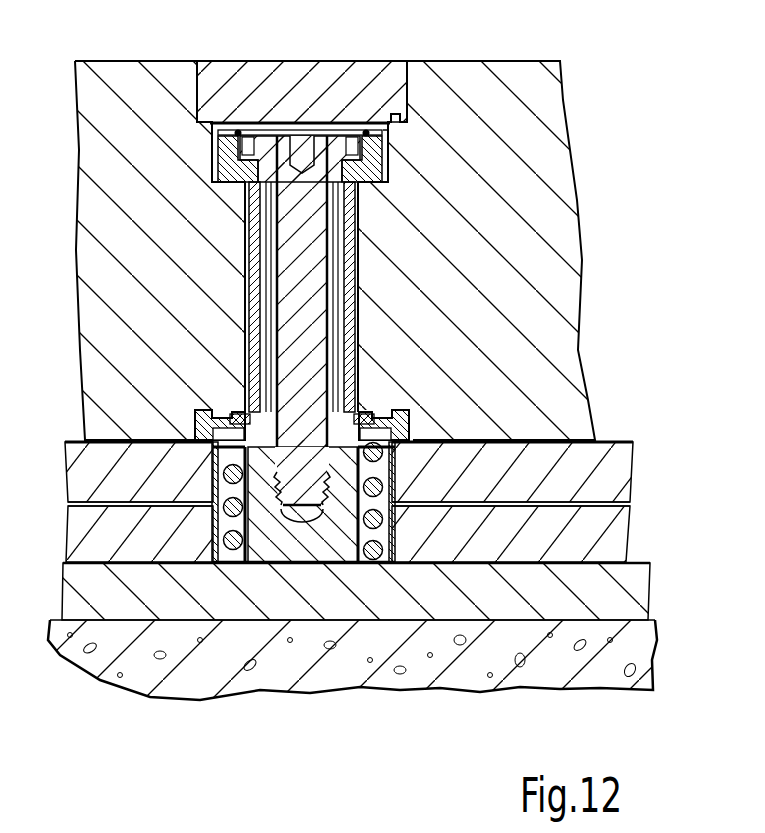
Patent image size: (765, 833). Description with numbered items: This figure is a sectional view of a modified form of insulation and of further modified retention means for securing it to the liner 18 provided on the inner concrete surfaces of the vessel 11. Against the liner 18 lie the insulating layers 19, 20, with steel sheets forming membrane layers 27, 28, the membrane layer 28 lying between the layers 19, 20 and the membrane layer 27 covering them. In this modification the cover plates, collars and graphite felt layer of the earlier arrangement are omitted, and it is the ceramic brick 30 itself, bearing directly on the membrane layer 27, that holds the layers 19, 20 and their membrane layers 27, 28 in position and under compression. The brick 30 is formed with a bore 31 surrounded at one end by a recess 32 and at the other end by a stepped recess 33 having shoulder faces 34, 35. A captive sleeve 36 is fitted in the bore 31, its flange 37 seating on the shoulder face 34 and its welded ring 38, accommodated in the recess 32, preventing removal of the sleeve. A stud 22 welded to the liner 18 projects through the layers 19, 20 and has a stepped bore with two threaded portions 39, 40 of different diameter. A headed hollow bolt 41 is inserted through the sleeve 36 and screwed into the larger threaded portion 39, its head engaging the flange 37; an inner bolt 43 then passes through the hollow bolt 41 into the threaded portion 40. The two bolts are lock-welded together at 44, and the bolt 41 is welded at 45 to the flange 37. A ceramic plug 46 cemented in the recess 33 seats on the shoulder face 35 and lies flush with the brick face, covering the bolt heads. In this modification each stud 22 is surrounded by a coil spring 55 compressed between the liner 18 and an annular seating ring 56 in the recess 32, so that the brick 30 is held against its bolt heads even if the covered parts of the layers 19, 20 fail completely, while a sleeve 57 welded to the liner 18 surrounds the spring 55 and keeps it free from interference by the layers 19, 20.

The vessel 11 is at (648, 655).
The liner 18 is at (643, 563).
The insulating layer 19 is at (613, 527).
The insulating layer 20 is at (622, 463).
The stud 22 is at (390, 537).
The steel sheet membrane layer 27 is at (602, 442).
The steel sheet membrane layer 28 is at (617, 505).
The ceramic brick 30 is at (575, 257).
The bore 31 is at (350, 268).
The recess 32 is at (407, 430).
The stepped recess 33 is at (387, 125).
The shoulder face 34 is at (385, 173).
The shoulder face 35 is at (398, 114).
The sleeve 36 is at (353, 240).
The flange 37 is at (385, 158).
The ring 38 is at (373, 405).
The threaded portion 39 is at (244, 466).
The threaded portion 40 is at (285, 512).
The headed hollow bolt 41 is at (268, 297).
The inner bolt 43 is at (282, 320).
The lock weld 44 is at (281, 134).
The weld 45 is at (238, 130).
The ceramic plug 46 is at (337, 67).
The coil spring 55 is at (380, 518).
The annular seating ring 56 is at (197, 423).
The sleeve 57 is at (263, 527).